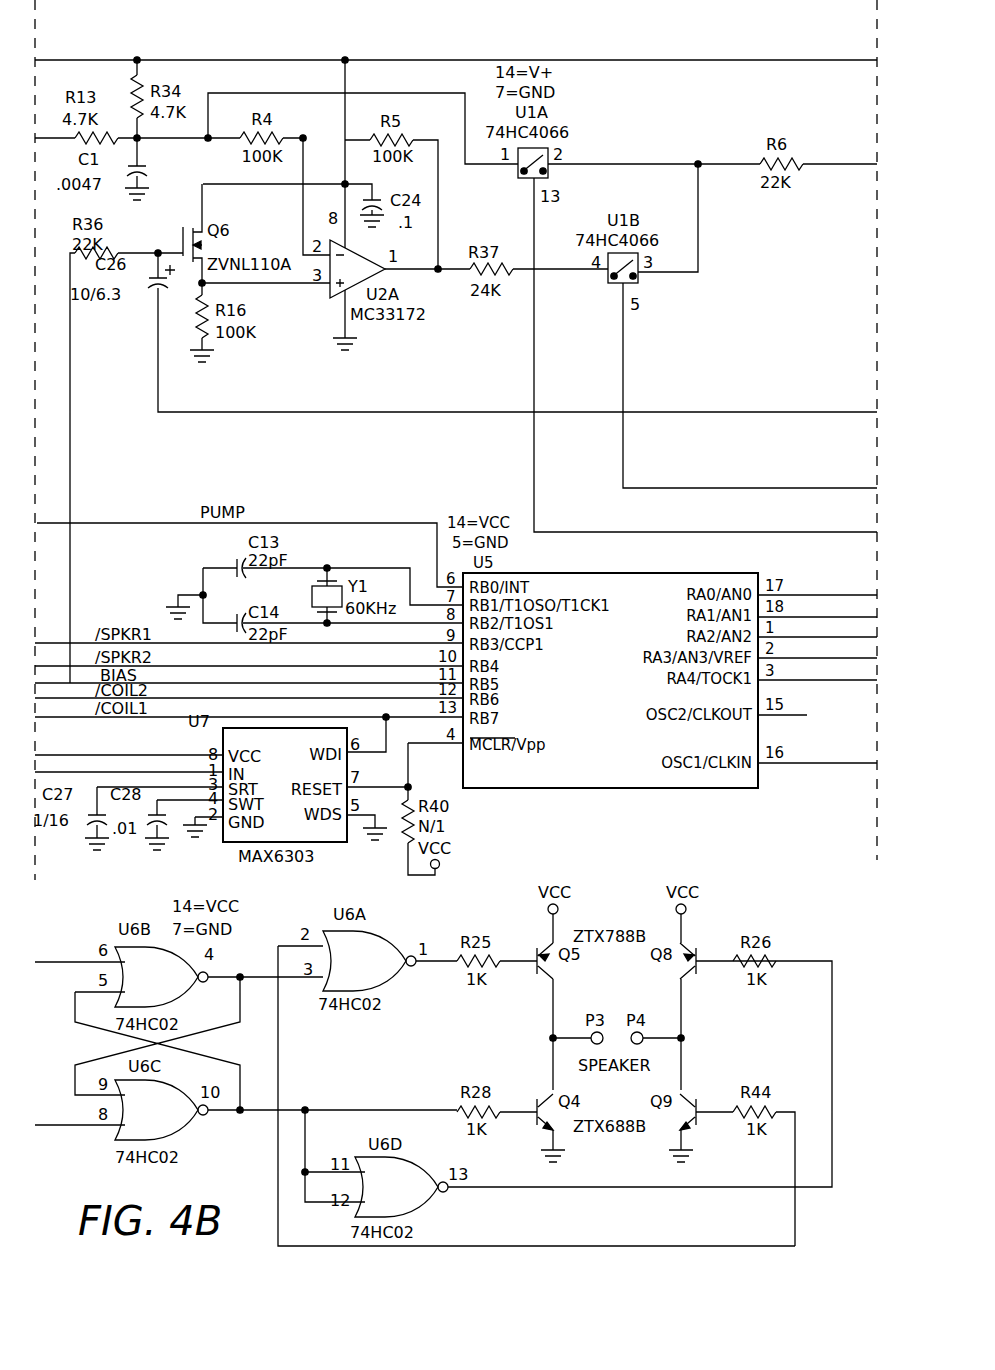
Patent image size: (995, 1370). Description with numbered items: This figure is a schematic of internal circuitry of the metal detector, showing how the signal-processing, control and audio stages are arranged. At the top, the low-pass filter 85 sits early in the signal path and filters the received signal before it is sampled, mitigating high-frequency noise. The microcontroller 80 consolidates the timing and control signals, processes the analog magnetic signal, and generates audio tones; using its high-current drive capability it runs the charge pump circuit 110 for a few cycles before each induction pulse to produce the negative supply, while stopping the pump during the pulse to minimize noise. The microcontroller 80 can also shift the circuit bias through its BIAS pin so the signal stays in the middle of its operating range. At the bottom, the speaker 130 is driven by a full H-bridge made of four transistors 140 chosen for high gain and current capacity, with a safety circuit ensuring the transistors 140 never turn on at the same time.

The low-pass filter 85 is at (163, 75).
The charge pump circuit 110 is at (298, 523).
The microcontroller 80 is at (578, 573).
The speaker 130 is at (636, 1007).
The transistors 140 is at (675, 942).